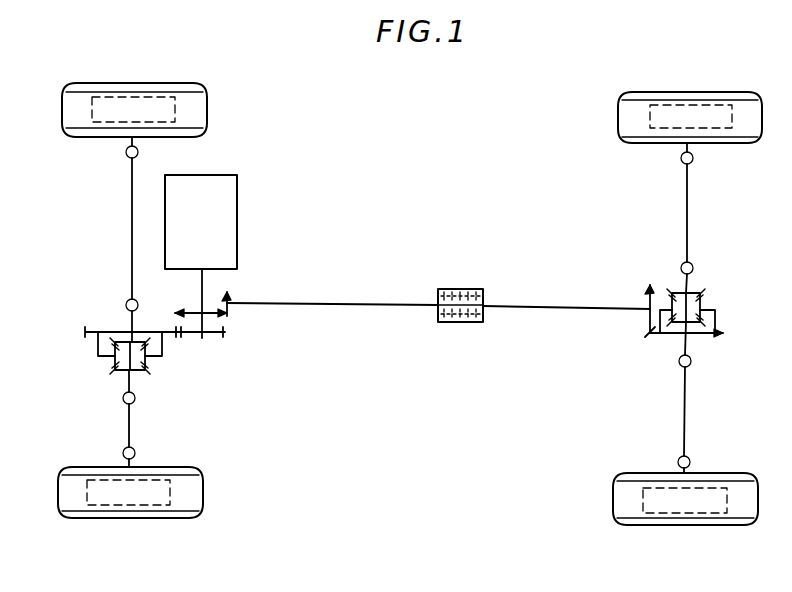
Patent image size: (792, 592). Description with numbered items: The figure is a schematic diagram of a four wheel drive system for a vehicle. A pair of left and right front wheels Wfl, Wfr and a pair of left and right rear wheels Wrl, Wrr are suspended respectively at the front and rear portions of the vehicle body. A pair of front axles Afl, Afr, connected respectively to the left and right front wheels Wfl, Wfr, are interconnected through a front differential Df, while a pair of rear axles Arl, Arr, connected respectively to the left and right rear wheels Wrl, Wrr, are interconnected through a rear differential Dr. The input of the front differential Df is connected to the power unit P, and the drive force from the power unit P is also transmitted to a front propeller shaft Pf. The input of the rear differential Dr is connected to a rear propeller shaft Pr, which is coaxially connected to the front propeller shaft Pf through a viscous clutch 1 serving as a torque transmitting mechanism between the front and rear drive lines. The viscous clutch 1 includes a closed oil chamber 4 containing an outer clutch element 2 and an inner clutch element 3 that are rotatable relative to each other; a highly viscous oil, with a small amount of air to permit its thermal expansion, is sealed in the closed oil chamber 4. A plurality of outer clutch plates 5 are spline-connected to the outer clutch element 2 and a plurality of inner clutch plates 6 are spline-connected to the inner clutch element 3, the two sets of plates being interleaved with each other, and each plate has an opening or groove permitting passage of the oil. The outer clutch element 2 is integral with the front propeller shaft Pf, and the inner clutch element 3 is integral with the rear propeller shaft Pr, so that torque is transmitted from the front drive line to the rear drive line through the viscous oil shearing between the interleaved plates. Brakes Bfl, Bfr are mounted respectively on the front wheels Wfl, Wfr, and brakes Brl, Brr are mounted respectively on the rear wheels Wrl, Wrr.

The right front wheel Wfr is at (84, 90).
The brake Bfr is at (152, 100).
The front axle Afr is at (130, 224).
The front differential Df is at (152, 366).
The front axle Afl is at (127, 426).
The left front wheel Wfl is at (88, 516).
The brake Bfl is at (157, 504).
The power unit P is at (206, 245).
The front propeller shaft Pf is at (322, 301).
The viscous clutch 1 is at (459, 288).
The outer clutch element 2 is at (470, 292).
The inner clutch element 3 is at (476, 321).
The closed oil chamber 4 is at (443, 322).
The outer clutch plates 5 is at (447, 292).
The inner clutch plates 6 is at (461, 322).
The rear propeller shaft Pr is at (568, 306).
The right rear wheel Wrr is at (650, 97).
The brake Brr is at (714, 105).
The rear axle Arr is at (688, 205).
The rear differential Dr is at (704, 302).
The rear axle Arl is at (686, 397).
The left rear wheel Wrl is at (650, 522).
The brake Brl is at (708, 514).